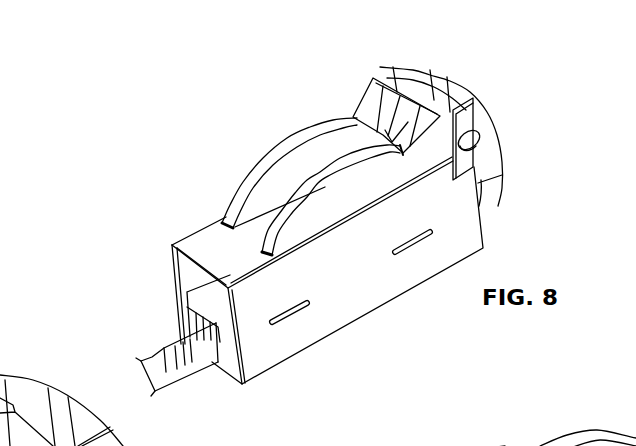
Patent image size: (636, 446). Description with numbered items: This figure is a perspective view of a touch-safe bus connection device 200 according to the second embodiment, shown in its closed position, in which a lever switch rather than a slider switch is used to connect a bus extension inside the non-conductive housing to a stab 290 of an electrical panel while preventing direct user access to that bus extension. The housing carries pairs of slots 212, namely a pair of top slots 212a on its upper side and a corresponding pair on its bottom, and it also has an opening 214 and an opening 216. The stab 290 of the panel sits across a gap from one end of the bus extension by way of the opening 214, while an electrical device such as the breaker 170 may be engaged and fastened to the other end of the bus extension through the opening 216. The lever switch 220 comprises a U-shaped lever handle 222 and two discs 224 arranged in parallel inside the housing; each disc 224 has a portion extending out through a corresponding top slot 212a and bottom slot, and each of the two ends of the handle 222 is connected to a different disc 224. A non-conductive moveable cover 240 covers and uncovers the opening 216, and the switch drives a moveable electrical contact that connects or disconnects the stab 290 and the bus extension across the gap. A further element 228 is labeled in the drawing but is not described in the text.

The touch-safe bus connection device 200 is at (128, 119).
The slots 212 is at (211, 233).
The top slots 212a is at (322, 222).
The opening 214 is at (162, 306).
The opening 216 is at (479, 157).
The lever switch 220 is at (273, 129).
The lever handle 222 is at (367, 100).
The discs 224 is at (259, 170).
The strap 228 is at (495, 445).
The moveable cover 240 is at (556, 445).
The breaker 170 is at (462, 95).
The stab 290 is at (168, 392).